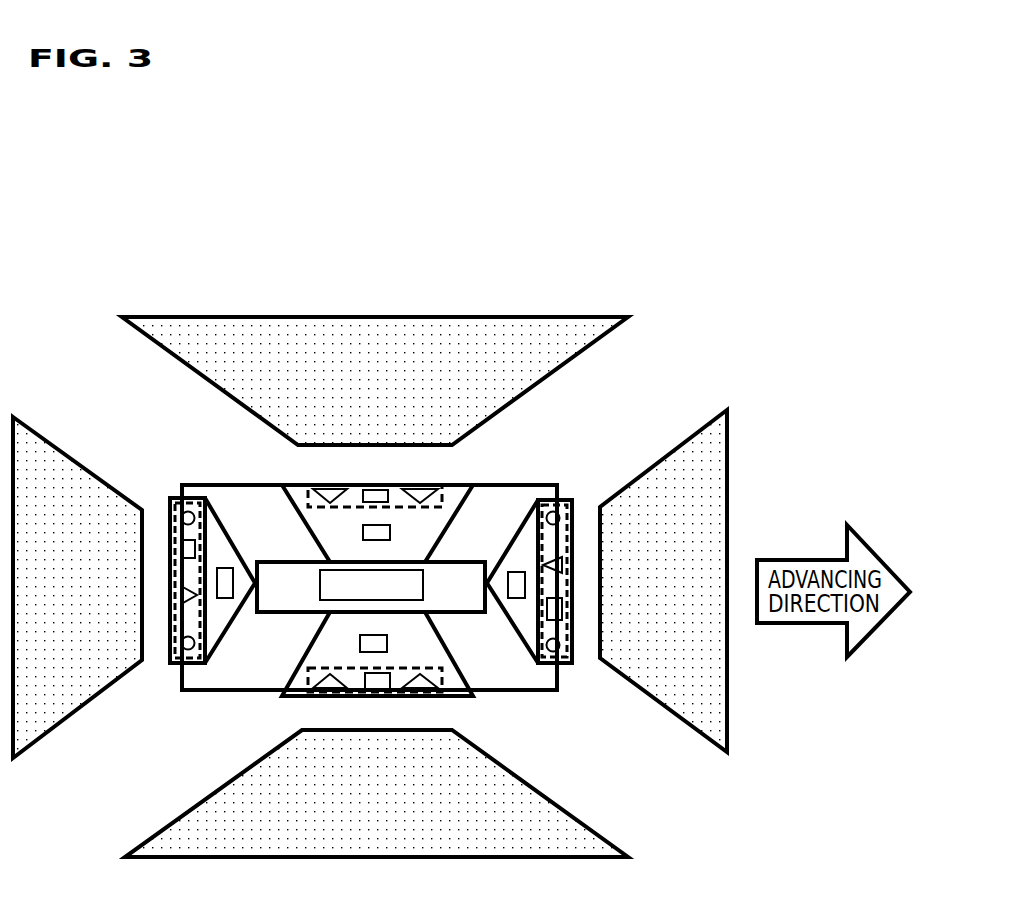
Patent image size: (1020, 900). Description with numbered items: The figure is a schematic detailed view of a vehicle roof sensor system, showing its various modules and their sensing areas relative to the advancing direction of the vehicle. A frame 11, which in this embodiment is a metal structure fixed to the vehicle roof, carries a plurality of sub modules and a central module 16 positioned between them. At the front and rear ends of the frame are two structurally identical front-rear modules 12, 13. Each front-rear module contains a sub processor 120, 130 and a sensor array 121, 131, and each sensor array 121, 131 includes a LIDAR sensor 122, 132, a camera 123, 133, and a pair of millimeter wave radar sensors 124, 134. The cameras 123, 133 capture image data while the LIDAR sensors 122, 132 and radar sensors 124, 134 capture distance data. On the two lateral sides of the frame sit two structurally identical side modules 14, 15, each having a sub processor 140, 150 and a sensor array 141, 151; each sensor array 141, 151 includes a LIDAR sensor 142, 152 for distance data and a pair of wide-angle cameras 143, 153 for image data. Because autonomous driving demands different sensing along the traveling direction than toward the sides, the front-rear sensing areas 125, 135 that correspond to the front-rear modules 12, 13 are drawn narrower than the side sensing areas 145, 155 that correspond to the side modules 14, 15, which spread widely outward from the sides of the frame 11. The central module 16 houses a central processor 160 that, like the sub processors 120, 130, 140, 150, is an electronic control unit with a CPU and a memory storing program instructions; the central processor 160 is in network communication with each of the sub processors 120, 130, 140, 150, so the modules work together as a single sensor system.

The frame 11 is at (540, 483).
The front-rear module 12 is at (560, 498).
The front-rear module 13 is at (170, 500).
The side module 14 is at (282, 484).
The side module 15 is at (284, 697).
The central module 16 is at (258, 560).
The sub processor 120 is at (520, 598).
The sensor array 121 is at (558, 665).
The LIDAR sensor 122 is at (578, 658).
The camera 123 is at (568, 558).
The millimeter wave radar sensor 124 is at (560, 512).
The front-rear sensing area 125 is at (693, 436).
The sub processor 130 is at (222, 598).
The sensor array 131 is at (178, 665).
The LIDAR sensor 132 is at (172, 547).
The camera 133 is at (172, 597).
The millimeter wave radar sensor 134 is at (172, 517).
The front-rear sensing area 135 is at (53, 446).
The sub processor 140 is at (390, 532).
The sensor array 141 is at (445, 484).
The LIDAR sensor 142 is at (380, 462).
The wide-angle camera 143 is at (330, 487).
The side sensing area 145 is at (545, 377).
The sub processor 150 is at (387, 643).
The sensor array 151 is at (450, 695).
The LIDAR sensor 152 is at (377, 692).
The wide-angle camera 153 is at (330, 693).
The side sensing area 155 is at (540, 793).
The central processor 160 is at (320, 598).